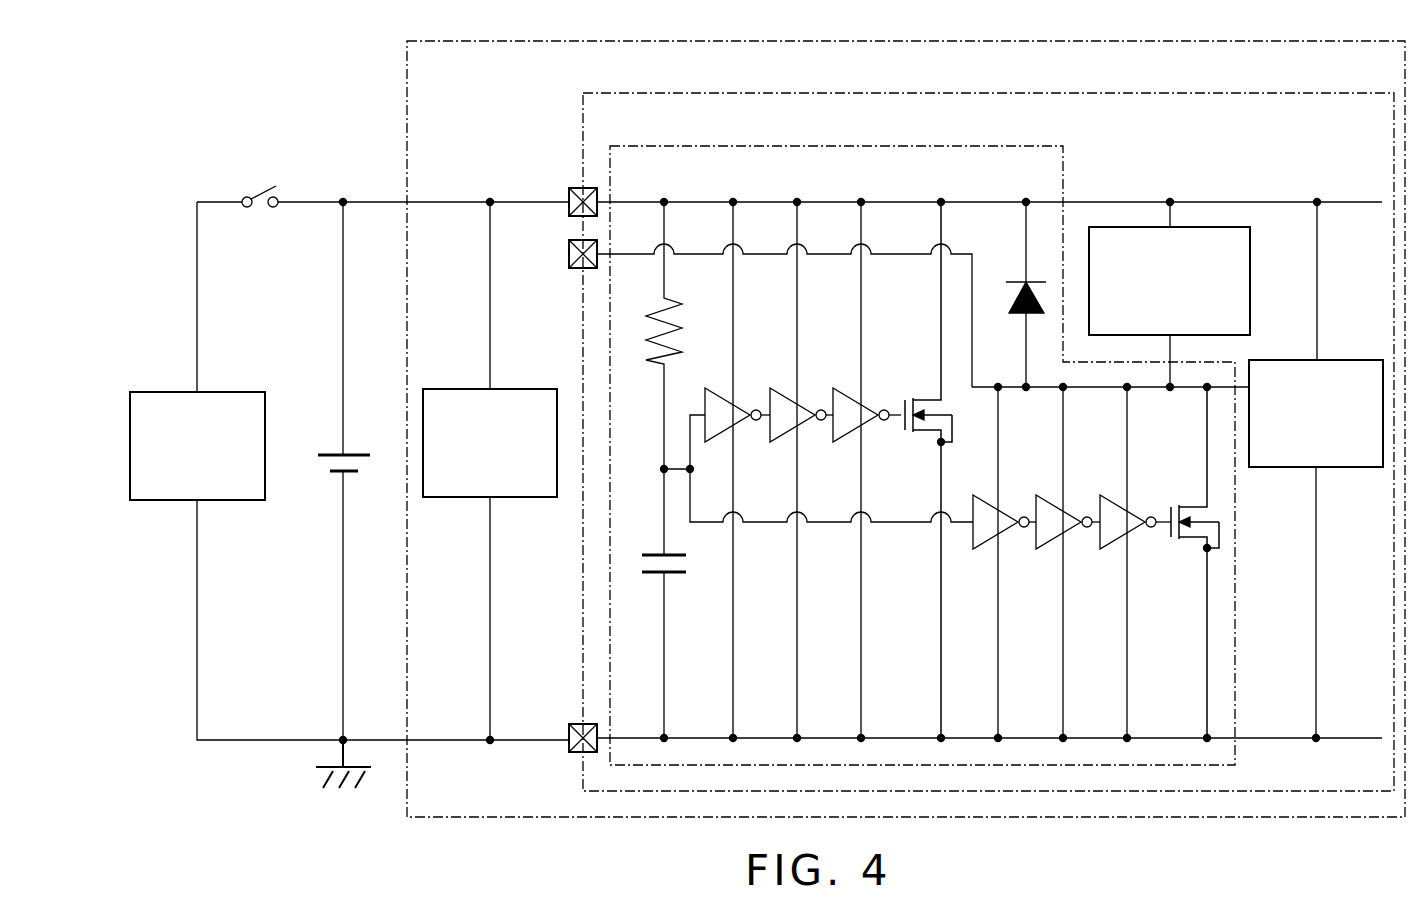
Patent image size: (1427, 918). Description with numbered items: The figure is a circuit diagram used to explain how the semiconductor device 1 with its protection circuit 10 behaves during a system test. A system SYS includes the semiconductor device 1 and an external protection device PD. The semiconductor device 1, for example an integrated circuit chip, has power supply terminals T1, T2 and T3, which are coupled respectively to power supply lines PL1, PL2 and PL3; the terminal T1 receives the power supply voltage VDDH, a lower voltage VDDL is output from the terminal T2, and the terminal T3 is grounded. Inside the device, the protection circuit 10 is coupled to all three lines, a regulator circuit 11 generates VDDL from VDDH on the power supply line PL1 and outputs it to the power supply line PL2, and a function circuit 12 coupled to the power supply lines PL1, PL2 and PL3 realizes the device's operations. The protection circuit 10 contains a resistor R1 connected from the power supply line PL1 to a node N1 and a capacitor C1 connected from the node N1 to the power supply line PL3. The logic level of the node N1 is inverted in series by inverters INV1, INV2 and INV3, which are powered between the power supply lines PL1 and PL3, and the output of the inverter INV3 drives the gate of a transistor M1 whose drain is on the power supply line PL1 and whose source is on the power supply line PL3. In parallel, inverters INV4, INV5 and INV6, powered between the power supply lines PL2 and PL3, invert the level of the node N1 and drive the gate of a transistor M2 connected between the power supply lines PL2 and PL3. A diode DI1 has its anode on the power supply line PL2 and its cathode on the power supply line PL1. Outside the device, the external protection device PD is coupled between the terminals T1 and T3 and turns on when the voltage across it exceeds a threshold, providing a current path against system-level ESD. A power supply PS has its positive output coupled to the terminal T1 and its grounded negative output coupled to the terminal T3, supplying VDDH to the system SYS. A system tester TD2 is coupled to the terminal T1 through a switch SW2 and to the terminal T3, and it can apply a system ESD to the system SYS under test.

The system SYS is at (407, 78).
The semiconductor device 1 is at (1280, 93).
The protection circuit 10 is at (1062, 146).
The regulator circuit 11 is at (1250, 262).
The function circuit 12 is at (1344, 360).
The terminal T1 is at (571, 188).
The terminal T2 is at (571, 268).
The terminal T3 is at (571, 724).
The power supply line PL1 is at (1000, 180).
The power supply line PL2 is at (996, 386).
The power supply line PL3 is at (968, 738).
The diode DI1 is at (1020, 281).
The switch SW2 is at (266, 184).
The system tester TD2 is at (222, 392).
The power supply PS is at (356, 453).
The external protection device PD is at (515, 389).
The resistor R1 is at (680, 300).
The capacitor C1 is at (680, 575).
The node N1 is at (662, 466).
The inverter INV1 is at (710, 388).
The inverter INV2 is at (775, 388).
The inverter INV3 is at (838, 388).
The inverter INV4 is at (975, 495).
The inverter INV5 is at (1040, 495).
The inverter INV6 is at (1104, 495).
The transistor M1 is at (918, 398).
The transistor M2 is at (1184, 505).